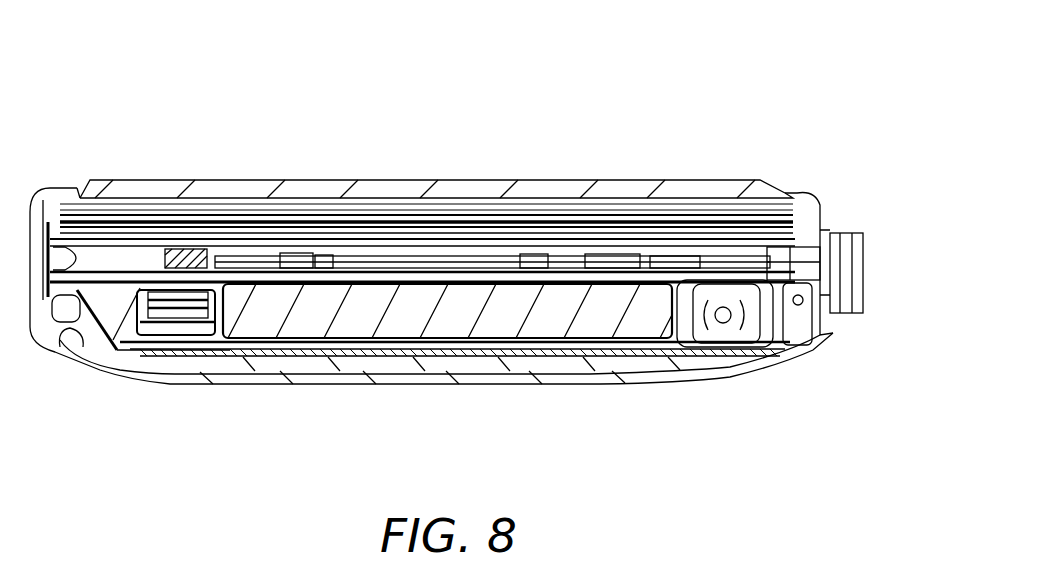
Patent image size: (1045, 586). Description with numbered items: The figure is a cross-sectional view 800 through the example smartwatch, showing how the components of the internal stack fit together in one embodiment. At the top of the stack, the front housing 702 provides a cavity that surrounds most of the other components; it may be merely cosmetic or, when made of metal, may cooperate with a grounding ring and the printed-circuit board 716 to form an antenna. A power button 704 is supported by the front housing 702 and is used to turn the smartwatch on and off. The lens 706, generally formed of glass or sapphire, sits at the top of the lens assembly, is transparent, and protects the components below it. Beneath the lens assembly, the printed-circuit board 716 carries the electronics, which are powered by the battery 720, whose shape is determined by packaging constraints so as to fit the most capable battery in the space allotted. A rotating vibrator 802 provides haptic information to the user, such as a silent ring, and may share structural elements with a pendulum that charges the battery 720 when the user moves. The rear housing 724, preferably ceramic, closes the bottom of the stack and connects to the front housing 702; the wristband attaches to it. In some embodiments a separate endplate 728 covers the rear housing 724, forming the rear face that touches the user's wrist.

The cross-sectional view 800 is at (664, 74).
The front housing 702 is at (47, 190).
The power button 704 is at (857, 237).
The lens 706 is at (313, 179).
The printed-circuit board 716 is at (415, 237).
The battery 720 is at (347, 330).
The rear housing 724 is at (63, 338).
The endplate 728 is at (470, 382).
The rotating vibrator 802 is at (730, 345).